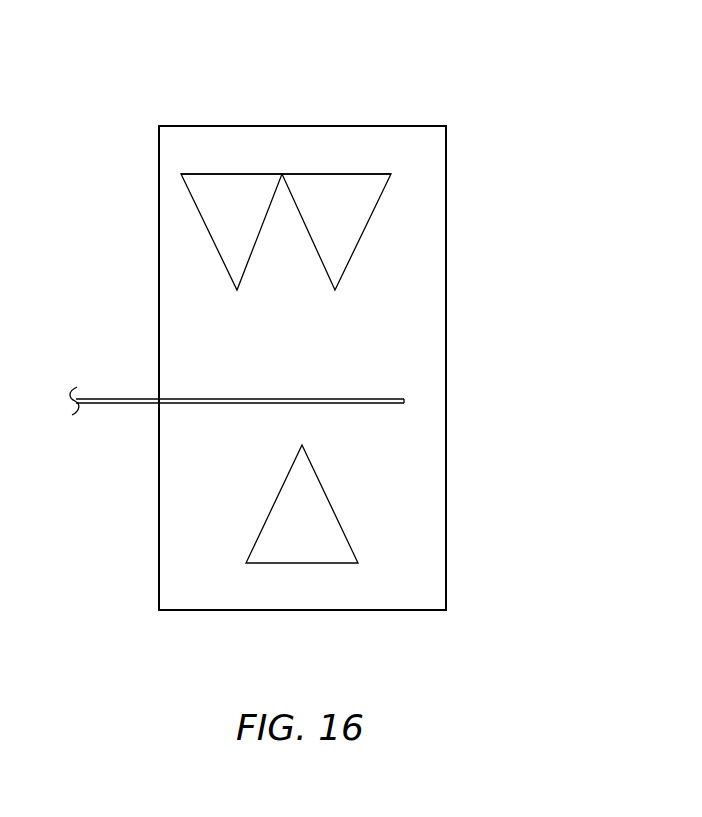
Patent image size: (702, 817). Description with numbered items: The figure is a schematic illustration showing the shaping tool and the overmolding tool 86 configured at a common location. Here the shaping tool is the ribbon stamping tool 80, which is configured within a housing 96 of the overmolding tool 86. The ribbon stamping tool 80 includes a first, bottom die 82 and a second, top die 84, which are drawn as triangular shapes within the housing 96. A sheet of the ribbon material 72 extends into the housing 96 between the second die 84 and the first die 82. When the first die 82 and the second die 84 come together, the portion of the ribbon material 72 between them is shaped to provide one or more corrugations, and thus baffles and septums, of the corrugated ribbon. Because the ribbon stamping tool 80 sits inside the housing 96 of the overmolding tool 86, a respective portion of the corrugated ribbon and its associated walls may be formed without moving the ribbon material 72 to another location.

The overmolding tool 86 is at (407, 127).
The ribbon stamping tool 80 is at (389, 208).
The second die 84 is at (231, 174).
The housing 96 is at (447, 276).
The ribbon material 72 is at (113, 405).
The first die 82 is at (316, 563).